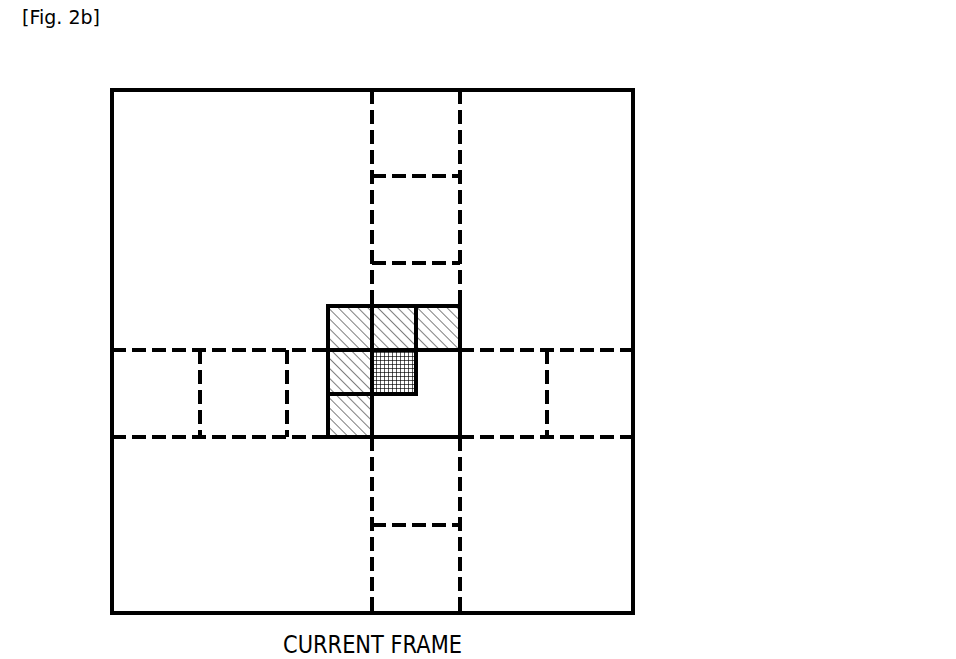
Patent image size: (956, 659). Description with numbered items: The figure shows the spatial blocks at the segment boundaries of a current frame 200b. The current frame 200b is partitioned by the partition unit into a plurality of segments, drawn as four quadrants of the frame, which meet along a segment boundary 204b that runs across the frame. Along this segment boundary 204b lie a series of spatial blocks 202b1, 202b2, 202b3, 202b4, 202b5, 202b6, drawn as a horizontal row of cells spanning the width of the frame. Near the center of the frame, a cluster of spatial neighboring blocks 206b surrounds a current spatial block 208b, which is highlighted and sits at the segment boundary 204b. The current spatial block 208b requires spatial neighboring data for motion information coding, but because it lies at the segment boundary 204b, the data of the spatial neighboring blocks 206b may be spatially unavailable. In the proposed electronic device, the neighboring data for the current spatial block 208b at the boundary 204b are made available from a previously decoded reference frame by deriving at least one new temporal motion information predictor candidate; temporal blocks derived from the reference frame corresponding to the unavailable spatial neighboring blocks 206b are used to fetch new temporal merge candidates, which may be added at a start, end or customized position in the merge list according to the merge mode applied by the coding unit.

The current frame 200b is at (235, 103).
The spatial block 202b1 is at (172, 408).
The spatial block 202b2 is at (259, 408).
The spatial block 202b3 is at (323, 390).
The spatial block 202b4 is at (432, 425).
The spatial block 202b5 is at (519, 405).
The spatial block 202b6 is at (606, 405).
The segment boundary 204b is at (156, 349).
The spatial neighboring blocks 206b is at (353, 306).
The current spatial block 208b is at (416, 378).